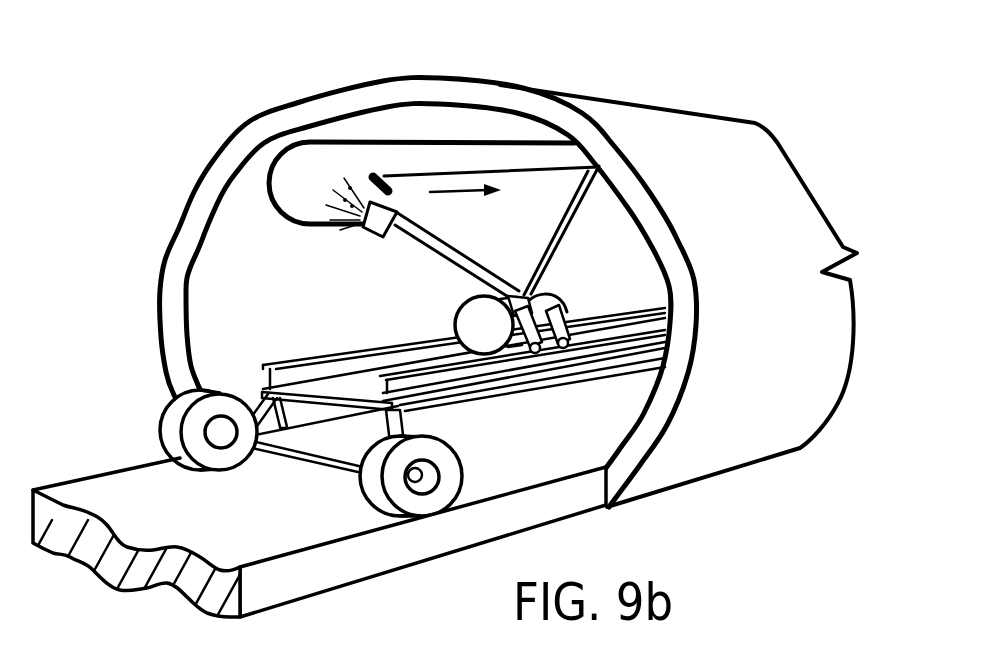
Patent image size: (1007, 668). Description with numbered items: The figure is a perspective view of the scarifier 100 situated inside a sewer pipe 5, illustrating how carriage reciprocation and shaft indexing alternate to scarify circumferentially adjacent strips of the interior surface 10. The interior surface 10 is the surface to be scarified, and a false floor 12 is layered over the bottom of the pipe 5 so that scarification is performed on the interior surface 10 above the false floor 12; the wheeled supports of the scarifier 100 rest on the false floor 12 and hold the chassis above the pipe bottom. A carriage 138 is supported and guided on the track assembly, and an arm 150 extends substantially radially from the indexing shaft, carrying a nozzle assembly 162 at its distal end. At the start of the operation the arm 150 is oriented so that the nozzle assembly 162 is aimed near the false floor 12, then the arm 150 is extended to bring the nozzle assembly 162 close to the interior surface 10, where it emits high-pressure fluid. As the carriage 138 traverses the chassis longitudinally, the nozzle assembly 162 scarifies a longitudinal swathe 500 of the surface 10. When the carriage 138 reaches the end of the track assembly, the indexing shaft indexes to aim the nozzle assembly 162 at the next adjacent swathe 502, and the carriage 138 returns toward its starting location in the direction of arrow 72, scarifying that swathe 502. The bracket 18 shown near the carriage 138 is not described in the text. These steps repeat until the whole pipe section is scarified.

The pipe 5 is at (247, 138).
The interior surface 10 is at (242, 313).
The false floor 12 is at (224, 524).
The pivot bracket 18 is at (581, 301).
The arrow 72 is at (443, 193).
The scarifier 100 is at (557, 398).
The carriage 138 is at (433, 319).
The arm 150 is at (441, 283).
The nozzle assembly 162 is at (368, 244).
The longitudinal swathe 500 is at (432, 160).
The next adjacent swathe 502 is at (330, 197).